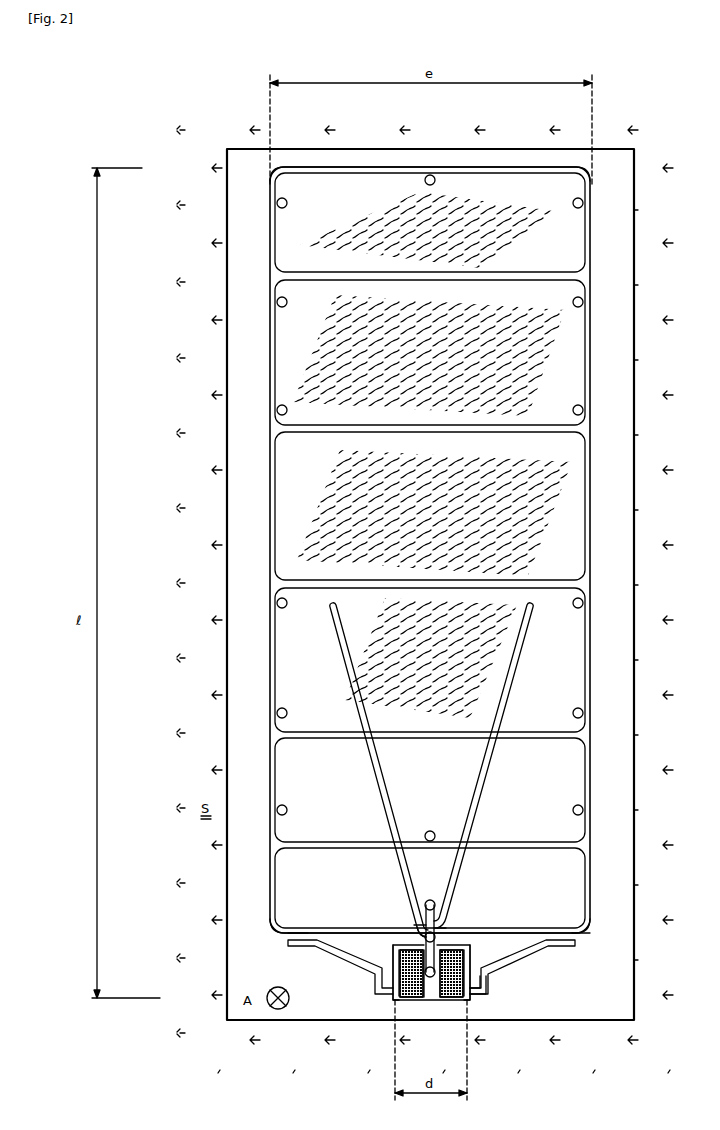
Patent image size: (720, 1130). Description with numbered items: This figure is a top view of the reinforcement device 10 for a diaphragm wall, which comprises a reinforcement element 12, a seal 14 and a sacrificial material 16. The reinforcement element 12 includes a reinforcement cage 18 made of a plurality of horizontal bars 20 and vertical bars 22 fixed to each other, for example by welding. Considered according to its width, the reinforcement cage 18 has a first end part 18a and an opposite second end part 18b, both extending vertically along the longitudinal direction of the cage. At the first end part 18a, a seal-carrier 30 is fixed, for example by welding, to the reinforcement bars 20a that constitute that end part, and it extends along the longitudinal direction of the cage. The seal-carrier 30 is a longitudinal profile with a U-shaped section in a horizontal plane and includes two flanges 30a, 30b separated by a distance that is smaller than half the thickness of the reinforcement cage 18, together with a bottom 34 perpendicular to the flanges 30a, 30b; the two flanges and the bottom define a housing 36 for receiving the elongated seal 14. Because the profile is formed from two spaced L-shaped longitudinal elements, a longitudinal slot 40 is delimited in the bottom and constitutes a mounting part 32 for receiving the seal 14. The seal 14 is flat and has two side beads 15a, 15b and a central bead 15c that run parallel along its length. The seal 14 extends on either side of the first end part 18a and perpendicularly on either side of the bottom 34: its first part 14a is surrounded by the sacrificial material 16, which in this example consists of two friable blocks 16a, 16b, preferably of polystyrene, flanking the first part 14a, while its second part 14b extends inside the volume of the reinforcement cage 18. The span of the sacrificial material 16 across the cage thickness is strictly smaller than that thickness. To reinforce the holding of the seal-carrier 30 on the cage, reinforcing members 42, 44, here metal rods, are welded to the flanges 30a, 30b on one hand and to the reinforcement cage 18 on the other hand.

The reinforcement device 10 is at (248, 342).
The reinforcement element 12 is at (266, 656).
The seal 14 is at (431, 1000).
The first part of the seal 14a is at (410, 938).
The second part of the seal 14b is at (458, 904).
The side bead 15a is at (436, 980).
The side bead 15b is at (476, 974).
The central bead 15c is at (432, 899).
The sacrificial material 16 is at (402, 1000).
The block of sacrificial material 16a is at (406, 963).
The block of sacrificial material 16b is at (452, 963).
The reinforcement cage 18 is at (267, 516).
The first end part 18a is at (262, 940).
The second end part 18b is at (227, 195).
The horizontal bars 20 is at (530, 738).
The reinforcement bars 20a is at (318, 934).
The vertical bars 22 is at (575, 607).
The seal-carrier 30 is at (472, 1007).
The flange 30a is at (392, 1001).
The flange 30b is at (470, 1001).
The mounting part 32 is at (450, 928).
The bottom 34 is at (418, 936).
The housing 36 is at (418, 1000).
The longitudinal slot 40 is at (408, 894).
The reinforcing member 42 is at (330, 963).
The reinforcing member 44 is at (541, 964).